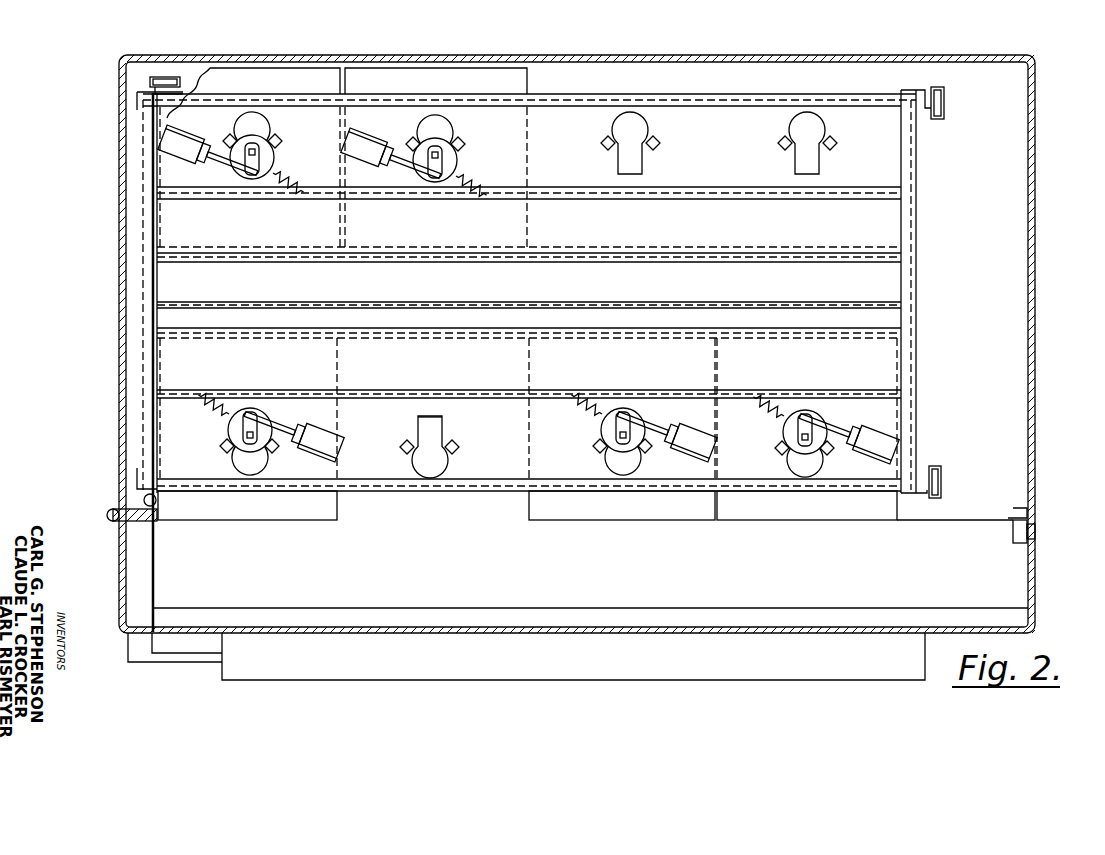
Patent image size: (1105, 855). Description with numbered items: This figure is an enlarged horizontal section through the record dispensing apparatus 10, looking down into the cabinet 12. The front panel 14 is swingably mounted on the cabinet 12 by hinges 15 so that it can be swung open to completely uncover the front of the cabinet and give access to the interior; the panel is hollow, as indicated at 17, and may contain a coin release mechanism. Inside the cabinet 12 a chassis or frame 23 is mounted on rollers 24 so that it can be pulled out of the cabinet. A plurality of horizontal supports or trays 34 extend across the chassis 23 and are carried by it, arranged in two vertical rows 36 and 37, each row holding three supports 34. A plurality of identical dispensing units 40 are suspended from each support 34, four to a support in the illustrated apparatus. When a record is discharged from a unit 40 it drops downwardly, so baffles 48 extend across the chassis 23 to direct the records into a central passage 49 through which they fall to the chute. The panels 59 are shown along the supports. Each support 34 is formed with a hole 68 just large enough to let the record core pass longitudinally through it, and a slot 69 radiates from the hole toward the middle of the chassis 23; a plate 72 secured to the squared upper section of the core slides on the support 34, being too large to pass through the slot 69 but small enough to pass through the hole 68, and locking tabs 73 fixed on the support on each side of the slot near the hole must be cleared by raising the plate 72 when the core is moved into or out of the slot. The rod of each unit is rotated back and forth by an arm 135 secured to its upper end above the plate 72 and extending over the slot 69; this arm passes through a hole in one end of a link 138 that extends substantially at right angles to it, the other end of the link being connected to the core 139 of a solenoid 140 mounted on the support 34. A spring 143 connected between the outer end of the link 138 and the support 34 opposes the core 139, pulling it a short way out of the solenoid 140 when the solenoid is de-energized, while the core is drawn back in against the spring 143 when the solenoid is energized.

The record dispensing apparatus 10 is at (605, 367).
The cabinet 12 is at (1033, 120).
The front panel 14 is at (1034, 578).
The hinges 15 is at (110, 514).
The hollow of panel 17 is at (1006, 558).
The chassis 23 is at (137, 286).
The rollers 24 is at (167, 77).
The supports 34 is at (550, 292).
The vertical row 36 is at (452, 392).
The vertical row 37 is at (590, 100).
The dispensing units 40 is at (282, 156).
The baffles 48 is at (606, 245).
The central passage 49 is at (906, 283).
The panel 59 is at (523, 84).
The hole 68 is at (447, 456).
The slot 69 is at (420, 418).
The plate 72 is at (600, 430).
The locking tabs 73 is at (418, 142).
The arm 135 is at (455, 158).
The link 138 is at (412, 150).
The core of solenoid 139 is at (365, 147).
The solenoid 140 is at (362, 150).
The spring 143 is at (212, 398).